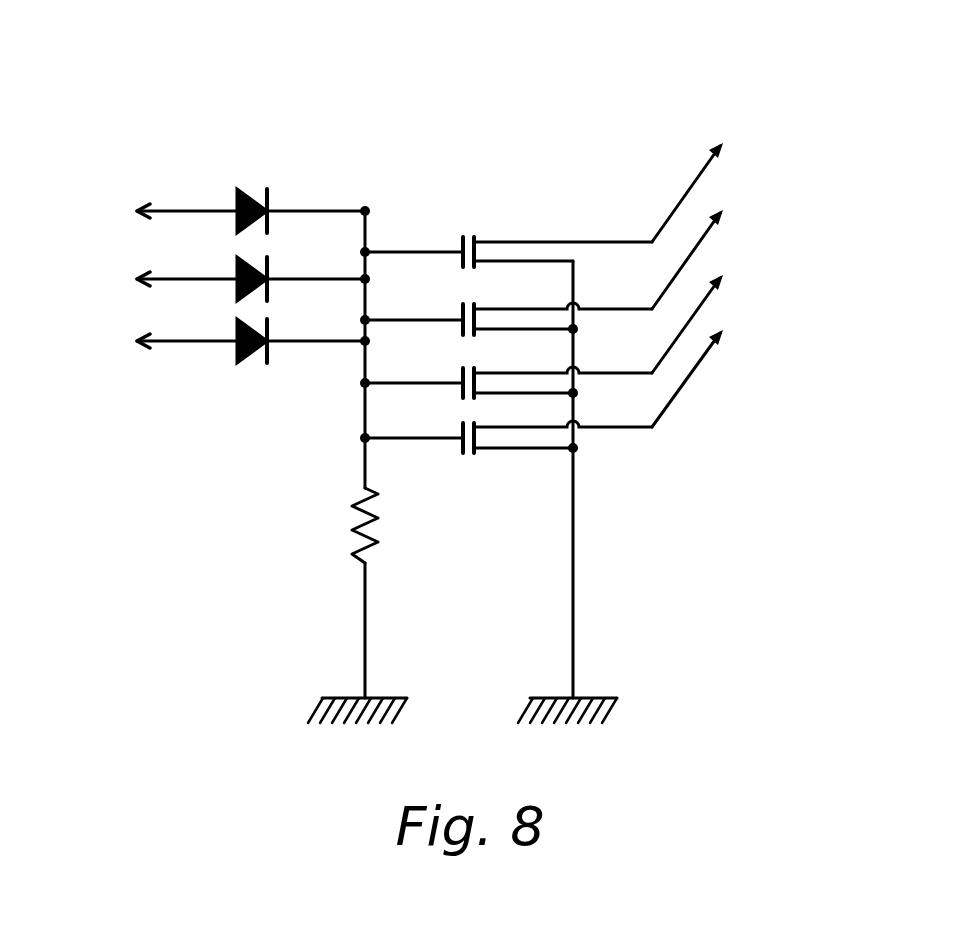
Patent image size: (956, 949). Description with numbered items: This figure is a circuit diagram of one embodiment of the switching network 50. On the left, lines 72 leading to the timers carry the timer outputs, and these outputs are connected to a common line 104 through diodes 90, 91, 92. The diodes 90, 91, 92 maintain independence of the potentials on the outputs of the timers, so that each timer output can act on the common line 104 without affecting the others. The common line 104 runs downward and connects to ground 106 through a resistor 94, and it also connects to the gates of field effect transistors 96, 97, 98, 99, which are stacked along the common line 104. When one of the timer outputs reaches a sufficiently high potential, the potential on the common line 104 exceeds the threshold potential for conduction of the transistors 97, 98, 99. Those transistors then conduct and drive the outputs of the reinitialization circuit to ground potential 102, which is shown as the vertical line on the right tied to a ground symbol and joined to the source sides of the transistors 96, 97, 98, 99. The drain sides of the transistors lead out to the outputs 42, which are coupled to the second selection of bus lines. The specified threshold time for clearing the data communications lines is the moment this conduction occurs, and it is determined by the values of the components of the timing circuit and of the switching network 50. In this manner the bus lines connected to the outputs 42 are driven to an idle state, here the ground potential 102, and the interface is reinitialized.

The switching network 50 is at (537, 121).
The timer output lines 72 is at (177, 211).
The diode 90 is at (268, 200).
The diode 91 is at (268, 268).
The diode 92 is at (268, 331).
The common line 104 is at (365, 210).
The field effect transistor 96 is at (463, 240).
The field effect transistor 97 is at (463, 307).
The field effect transistor 98 is at (463, 370).
The field effect transistor 99 is at (462, 452).
The ground potential 102 is at (573, 505).
The resistor 94 is at (353, 533).
The ground 106 is at (365, 627).
The outputs 42 is at (708, 350).